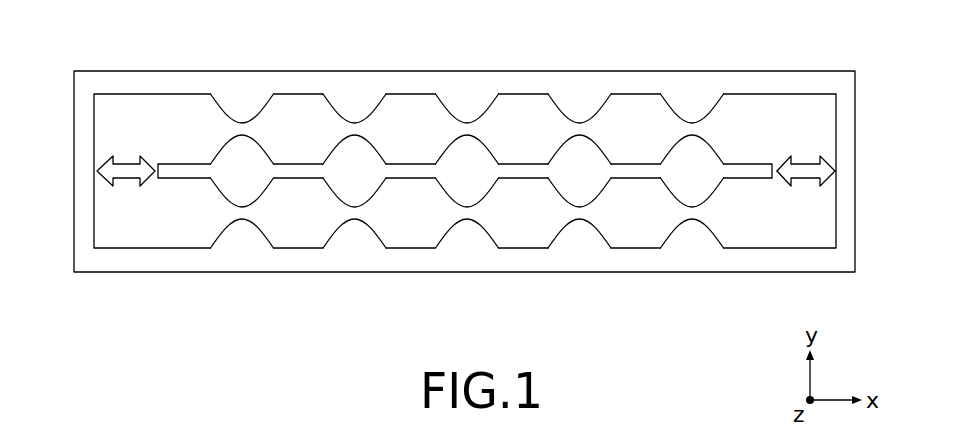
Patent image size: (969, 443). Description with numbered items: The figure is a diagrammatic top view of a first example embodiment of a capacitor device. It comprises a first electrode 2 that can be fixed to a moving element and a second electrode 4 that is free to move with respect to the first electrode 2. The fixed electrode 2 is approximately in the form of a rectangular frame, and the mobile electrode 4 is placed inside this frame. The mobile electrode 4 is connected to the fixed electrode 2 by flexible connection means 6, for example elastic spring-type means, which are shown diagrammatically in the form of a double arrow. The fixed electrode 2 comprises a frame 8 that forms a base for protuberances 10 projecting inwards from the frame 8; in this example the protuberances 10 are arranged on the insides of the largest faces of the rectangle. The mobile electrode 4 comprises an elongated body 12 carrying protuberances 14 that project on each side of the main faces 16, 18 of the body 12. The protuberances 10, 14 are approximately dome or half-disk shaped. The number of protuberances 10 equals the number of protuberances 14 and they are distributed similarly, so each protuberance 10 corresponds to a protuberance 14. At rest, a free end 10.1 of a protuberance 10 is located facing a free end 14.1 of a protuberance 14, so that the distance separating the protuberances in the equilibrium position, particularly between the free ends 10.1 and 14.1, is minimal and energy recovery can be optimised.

The first electrode 2 is at (281, 69).
The second electrode 4 is at (517, 156).
The flexible connection means 6 is at (807, 184).
The frame 8 is at (82, 212).
The protuberances 10 is at (216, 104).
The free end 10.1 is at (598, 112).
The elongated body 12 is at (742, 171).
The protuberances 14 is at (386, 145).
The free end 14.1 is at (580, 143).
The main face 16 is at (775, 162).
The main face 18 is at (773, 182).